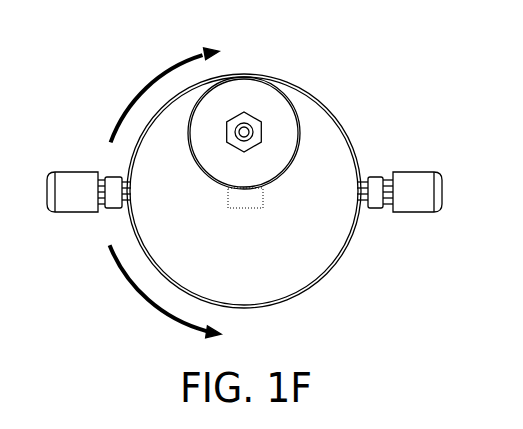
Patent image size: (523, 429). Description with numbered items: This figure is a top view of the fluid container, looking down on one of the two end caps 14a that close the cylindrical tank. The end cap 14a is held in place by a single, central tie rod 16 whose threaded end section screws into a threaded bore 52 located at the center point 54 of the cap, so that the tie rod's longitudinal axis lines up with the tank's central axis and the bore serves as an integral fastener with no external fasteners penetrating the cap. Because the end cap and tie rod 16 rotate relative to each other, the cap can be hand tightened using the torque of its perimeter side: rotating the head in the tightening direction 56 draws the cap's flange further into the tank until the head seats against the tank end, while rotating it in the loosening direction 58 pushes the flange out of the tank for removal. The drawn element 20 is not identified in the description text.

The end cap 14a is at (320, 242).
The rotatable disc 20 is at (248, 92).
The tie rod 16 is at (253, 193).
The threaded bore 52 is at (235, 205).
The center point 54 is at (243, 193).
The tightening direction 56 is at (140, 80).
The loosening direction 58 is at (132, 305).